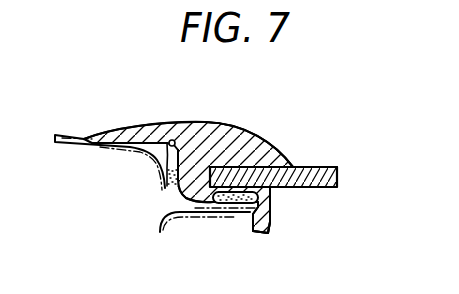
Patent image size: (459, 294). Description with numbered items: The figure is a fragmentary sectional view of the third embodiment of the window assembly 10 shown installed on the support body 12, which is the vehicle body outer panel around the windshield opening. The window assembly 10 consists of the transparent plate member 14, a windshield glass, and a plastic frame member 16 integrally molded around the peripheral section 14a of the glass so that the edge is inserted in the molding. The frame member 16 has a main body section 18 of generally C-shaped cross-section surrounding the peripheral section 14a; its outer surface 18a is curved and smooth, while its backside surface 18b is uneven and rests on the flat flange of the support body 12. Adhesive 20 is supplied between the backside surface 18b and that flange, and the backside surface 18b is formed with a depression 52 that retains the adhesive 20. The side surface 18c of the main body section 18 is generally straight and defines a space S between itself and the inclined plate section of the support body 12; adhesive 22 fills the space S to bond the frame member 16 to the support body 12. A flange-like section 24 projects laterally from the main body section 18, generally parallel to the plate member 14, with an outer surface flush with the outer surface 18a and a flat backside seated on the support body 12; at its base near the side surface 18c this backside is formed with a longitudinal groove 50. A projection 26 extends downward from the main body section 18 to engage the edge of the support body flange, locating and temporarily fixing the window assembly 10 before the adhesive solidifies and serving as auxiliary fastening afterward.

The window assembly 10 is at (335, 120).
The support body 12 is at (197, 219).
The plate member 14 is at (318, 189).
The peripheral section of the plate member 14a is at (296, 167).
The frame member 16 is at (286, 149).
The main body section 18 is at (244, 146).
The outer surface of the main body section 18a is at (211, 124).
The backside surface of the main body section 18b is at (178, 223).
The side surface of the main body section 18c is at (158, 170).
The adhesive 20 is at (250, 220).
The adhesive 22 is at (165, 186).
The flange-like section 24 is at (122, 128).
The projection 26 is at (268, 229).
The groove 50 is at (171, 140).
The depression 52 is at (219, 207).
The space S is at (156, 161).